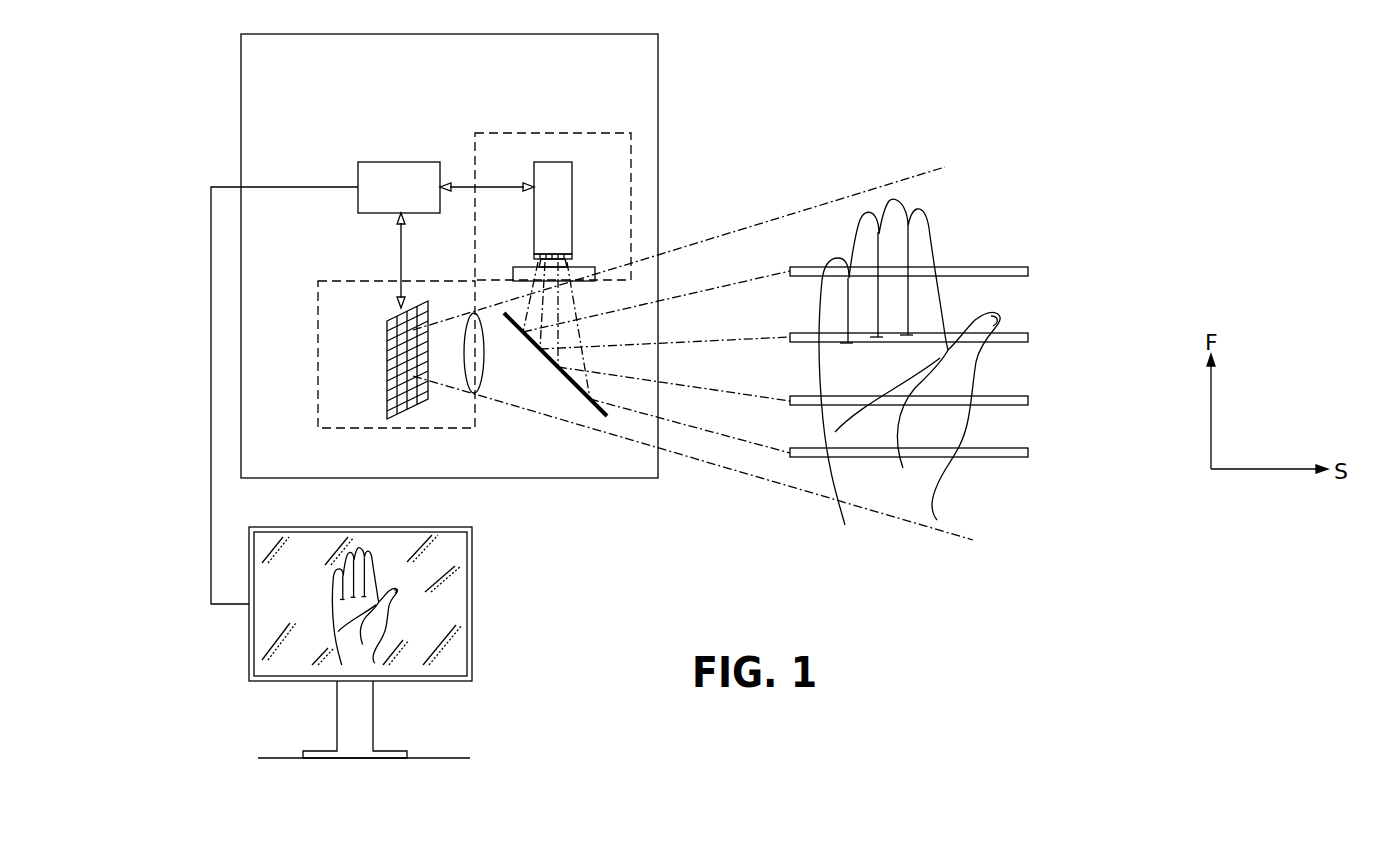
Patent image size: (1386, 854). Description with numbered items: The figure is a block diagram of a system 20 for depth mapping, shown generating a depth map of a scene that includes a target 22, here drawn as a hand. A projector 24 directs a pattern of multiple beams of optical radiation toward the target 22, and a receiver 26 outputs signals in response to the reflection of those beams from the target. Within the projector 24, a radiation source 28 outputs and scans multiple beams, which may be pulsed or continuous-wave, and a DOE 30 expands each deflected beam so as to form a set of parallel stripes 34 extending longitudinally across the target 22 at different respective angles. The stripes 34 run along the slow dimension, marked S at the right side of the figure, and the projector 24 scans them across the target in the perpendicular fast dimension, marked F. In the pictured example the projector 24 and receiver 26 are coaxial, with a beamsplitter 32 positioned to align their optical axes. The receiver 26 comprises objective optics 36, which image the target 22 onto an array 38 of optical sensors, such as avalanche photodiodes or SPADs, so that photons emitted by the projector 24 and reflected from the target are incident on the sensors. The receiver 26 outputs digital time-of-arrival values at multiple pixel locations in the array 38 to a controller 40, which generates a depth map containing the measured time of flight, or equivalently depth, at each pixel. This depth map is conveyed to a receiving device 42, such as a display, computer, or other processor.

The system 20 is at (241, 128).
The target 22 is at (920, 242).
The projector 24 is at (534, 133).
The receiver 26 is at (358, 281).
The radiation source 28 is at (572, 177).
The DOE 30 is at (582, 267).
The beamsplitter 32 is at (600, 416).
The stripes 34 is at (1028, 271).
The objective optics 36 is at (484, 380).
The array 38 is at (387, 347).
The controller 40 is at (397, 162).
The receiving device 42 is at (472, 610).